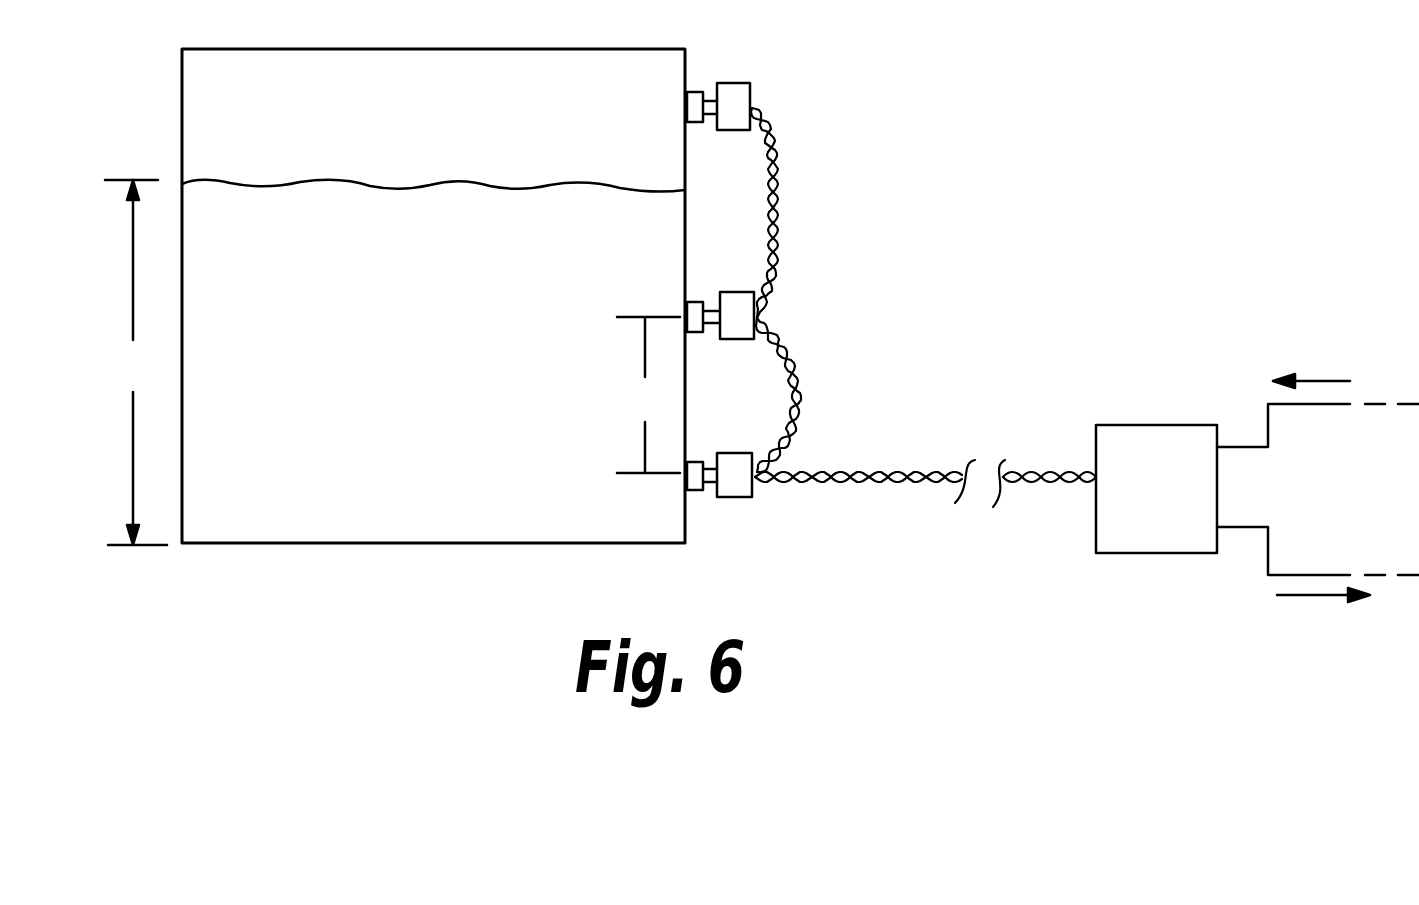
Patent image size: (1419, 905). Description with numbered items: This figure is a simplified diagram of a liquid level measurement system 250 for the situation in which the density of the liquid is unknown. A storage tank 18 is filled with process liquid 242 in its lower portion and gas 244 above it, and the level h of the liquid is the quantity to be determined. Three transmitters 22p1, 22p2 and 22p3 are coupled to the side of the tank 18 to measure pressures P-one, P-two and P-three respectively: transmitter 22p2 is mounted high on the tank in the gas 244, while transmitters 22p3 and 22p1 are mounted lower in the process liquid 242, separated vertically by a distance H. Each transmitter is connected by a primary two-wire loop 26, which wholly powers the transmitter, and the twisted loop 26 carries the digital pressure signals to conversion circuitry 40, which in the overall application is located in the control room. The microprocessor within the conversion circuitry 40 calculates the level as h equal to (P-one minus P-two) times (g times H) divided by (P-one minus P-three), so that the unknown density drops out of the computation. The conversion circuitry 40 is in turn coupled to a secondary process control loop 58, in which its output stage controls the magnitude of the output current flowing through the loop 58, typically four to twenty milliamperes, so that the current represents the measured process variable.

The storage tank 18 is at (200, 67).
The gas 244 is at (476, 128).
The process liquid 242 is at (476, 348).
The transmitter 22p2 is at (752, 93).
The transmitter 22p3 is at (737, 303).
The transmitter 22p1 is at (733, 465).
The primary two-wire loop 26 is at (785, 215).
The conversion circuitry 40 is at (1172, 514).
The secondary process control loop 58 is at (1270, 541).
The liquid level measurement system 250 is at (759, 324).